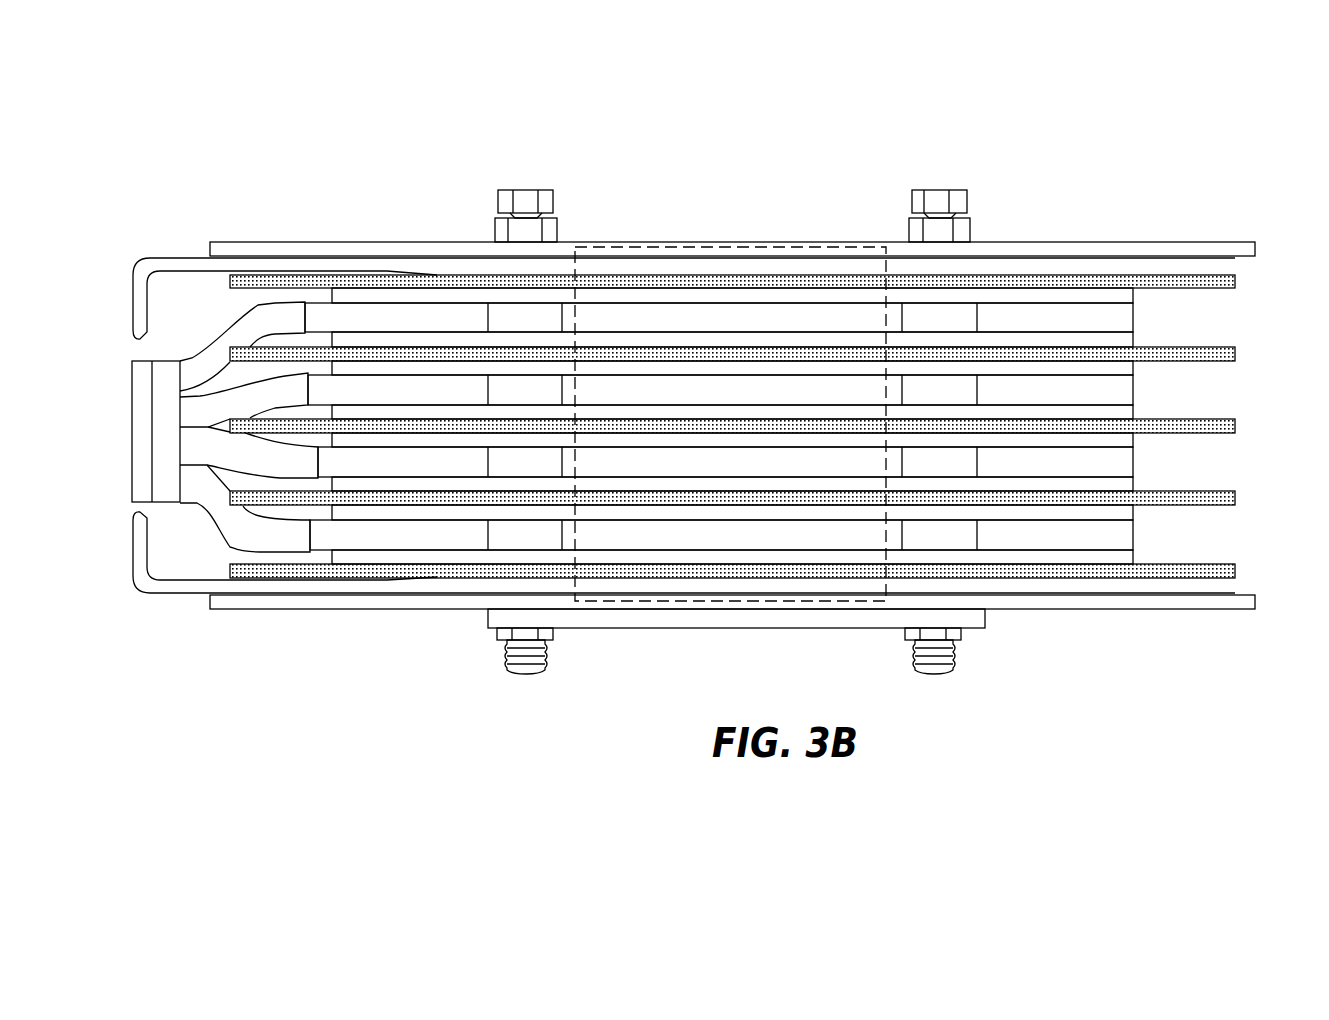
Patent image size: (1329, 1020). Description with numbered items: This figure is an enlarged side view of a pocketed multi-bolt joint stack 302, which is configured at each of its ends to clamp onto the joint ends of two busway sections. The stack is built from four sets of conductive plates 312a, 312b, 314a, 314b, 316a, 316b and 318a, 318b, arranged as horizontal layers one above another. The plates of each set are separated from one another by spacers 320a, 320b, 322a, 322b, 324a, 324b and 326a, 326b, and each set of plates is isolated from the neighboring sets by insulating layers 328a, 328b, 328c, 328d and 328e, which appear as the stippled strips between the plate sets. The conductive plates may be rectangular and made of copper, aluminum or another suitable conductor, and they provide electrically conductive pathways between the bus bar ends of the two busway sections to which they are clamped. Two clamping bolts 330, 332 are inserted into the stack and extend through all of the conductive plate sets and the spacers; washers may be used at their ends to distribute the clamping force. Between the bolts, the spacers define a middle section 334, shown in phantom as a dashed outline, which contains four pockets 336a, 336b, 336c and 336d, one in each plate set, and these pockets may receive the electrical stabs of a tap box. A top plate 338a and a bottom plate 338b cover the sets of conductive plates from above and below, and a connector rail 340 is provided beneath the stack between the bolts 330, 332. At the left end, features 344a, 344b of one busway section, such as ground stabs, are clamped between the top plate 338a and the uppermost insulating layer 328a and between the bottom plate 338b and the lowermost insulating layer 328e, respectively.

The pocketed multi-bolt joint stack 302 is at (1070, 122).
The conductive plate 312a is at (1133, 296).
The conductive plate 312b is at (1133, 339).
The conductive plate 314a is at (1133, 369).
The conductive plate 314b is at (1133, 412).
The conductive plate 316a is at (1133, 440).
The conductive plate 316b is at (1133, 484).
The conductive plate 318a is at (1133, 513).
The conductive plate 318b is at (1133, 557).
The spacer 320a is at (525, 317).
The spacer 320b is at (939, 317).
The spacer 322a is at (525, 390).
The spacer 322b is at (939, 390).
The spacer 324a is at (525, 462).
The spacer 324b is at (939, 462).
The spacer 326a is at (525, 535).
The spacer 326b is at (939, 535).
The insulating layer 328a is at (1235, 282).
The insulating layer 328b is at (1235, 354).
The insulating layer 328c is at (1235, 426).
The insulating layer 328d is at (1235, 497).
The insulating layer 328e is at (1235, 570).
The clamping bolt 330 is at (572, 203).
The clamping bolt 332 is at (886, 200).
The middle section 334 is at (807, 246).
The pocket 336a is at (710, 329).
The pocket 336b is at (710, 401).
The pocket 336c is at (710, 473).
The pocket 336d is at (710, 546).
The top plate 338a is at (1185, 243).
The bottom plate 338b is at (1208, 597).
The connector rail 340 is at (745, 630).
The feature of busway section 344a is at (163, 257).
The feature of busway section 344b is at (180, 598).